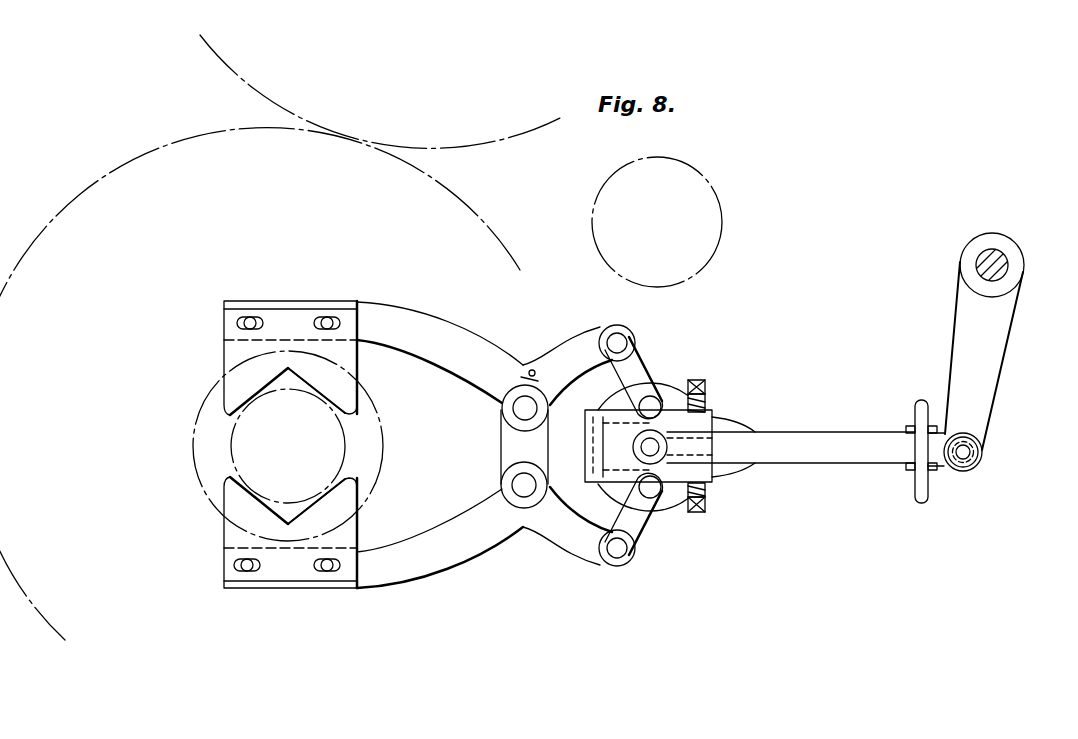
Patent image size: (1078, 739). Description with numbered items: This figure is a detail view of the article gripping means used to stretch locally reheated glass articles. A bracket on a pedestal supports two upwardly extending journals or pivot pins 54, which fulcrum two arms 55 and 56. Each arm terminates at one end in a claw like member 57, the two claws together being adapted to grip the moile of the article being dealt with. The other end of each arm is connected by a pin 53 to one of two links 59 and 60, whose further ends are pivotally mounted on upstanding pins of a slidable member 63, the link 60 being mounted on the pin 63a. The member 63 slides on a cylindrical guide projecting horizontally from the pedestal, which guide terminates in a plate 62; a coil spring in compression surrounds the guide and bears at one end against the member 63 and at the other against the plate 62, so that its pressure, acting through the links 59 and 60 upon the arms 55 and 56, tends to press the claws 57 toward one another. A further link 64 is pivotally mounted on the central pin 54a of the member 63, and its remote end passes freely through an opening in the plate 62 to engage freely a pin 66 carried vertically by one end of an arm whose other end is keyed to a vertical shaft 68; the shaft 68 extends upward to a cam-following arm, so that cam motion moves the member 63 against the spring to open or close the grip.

The toggle link pivot pin 53 is at (618, 341).
The pivot pins 54 is at (520, 405).
The central pivot pin 54a is at (653, 446).
The arm 55 is at (372, 590).
The arm 56 is at (452, 327).
The claw like member 57 is at (253, 379).
The link 59 is at (640, 535).
The link 60 is at (637, 365).
The plate 62 is at (925, 479).
The slidable member 63 is at (703, 475).
The upstanding pin 63a is at (652, 405).
The link 64 is at (785, 432).
The pin 66 is at (970, 452).
The vertical shaft 68 is at (1010, 265).